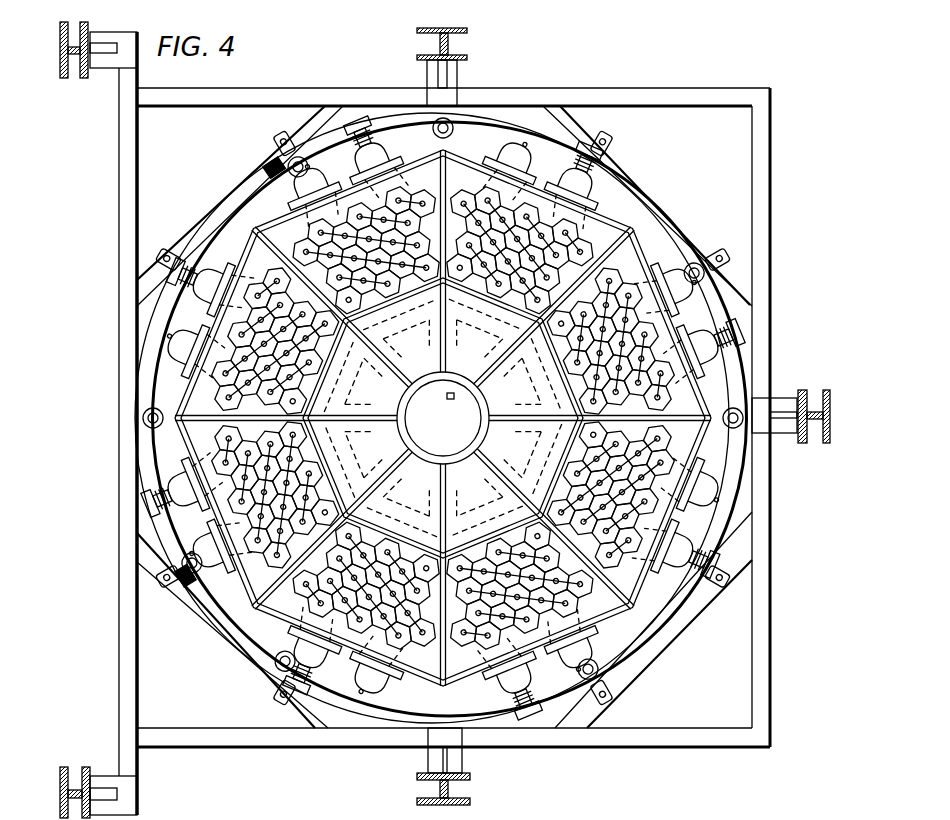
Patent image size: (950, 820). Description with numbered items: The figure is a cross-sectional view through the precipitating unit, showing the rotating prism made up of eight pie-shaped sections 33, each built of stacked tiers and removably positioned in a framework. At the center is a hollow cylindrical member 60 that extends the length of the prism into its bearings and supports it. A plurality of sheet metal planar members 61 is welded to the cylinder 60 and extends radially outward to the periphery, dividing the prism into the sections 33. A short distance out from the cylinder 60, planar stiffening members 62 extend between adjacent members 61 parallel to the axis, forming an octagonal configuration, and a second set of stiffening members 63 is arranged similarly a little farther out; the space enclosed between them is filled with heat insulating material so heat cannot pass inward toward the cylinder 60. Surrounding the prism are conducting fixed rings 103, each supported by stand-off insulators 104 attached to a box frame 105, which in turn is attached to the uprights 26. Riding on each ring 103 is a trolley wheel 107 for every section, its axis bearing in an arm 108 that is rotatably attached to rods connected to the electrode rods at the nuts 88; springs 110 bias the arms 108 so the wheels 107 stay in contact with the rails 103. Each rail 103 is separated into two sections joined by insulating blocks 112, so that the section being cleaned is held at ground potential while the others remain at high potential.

The uprights 26 is at (82, 78).
The pie-shaped sections 33 is at (300, 214).
The hollow cylindrical member 60 is at (443, 418).
The sheet metal planar members 61 is at (587, 167).
The planar stiffening members 62 is at (451, 392).
The second set of stiffening members 63 is at (443, 418).
The nuts 88 is at (382, 675).
The conducting fixed rings 103 is at (232, 633).
The stand-off insulators 104 is at (597, 660).
The box frame 105 is at (763, 617).
The trolley wheels 107 is at (517, 707).
The arms 108 is at (530, 717).
The springs 110 is at (527, 688).
The insulating blocks 112 is at (188, 587).